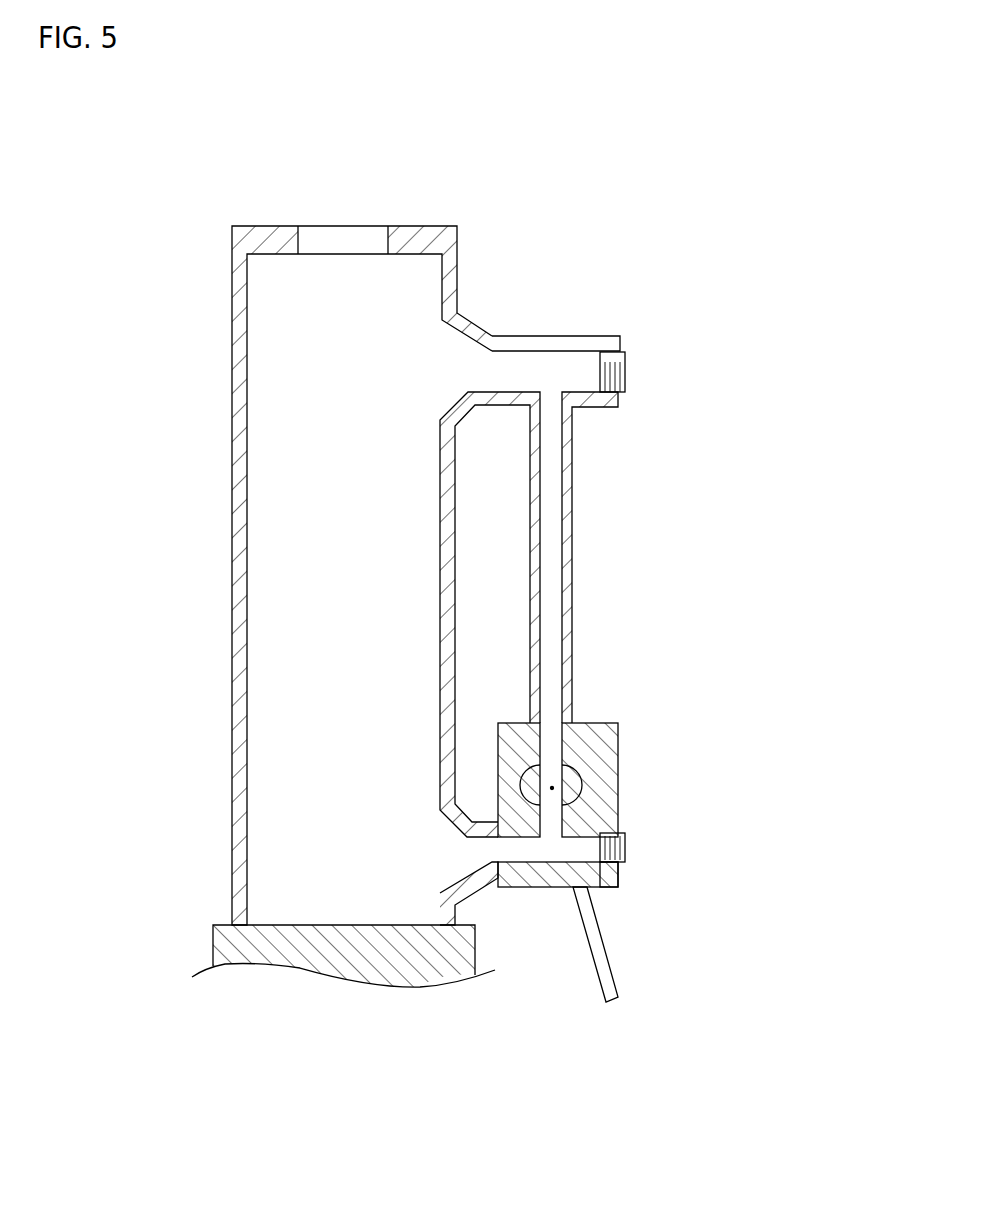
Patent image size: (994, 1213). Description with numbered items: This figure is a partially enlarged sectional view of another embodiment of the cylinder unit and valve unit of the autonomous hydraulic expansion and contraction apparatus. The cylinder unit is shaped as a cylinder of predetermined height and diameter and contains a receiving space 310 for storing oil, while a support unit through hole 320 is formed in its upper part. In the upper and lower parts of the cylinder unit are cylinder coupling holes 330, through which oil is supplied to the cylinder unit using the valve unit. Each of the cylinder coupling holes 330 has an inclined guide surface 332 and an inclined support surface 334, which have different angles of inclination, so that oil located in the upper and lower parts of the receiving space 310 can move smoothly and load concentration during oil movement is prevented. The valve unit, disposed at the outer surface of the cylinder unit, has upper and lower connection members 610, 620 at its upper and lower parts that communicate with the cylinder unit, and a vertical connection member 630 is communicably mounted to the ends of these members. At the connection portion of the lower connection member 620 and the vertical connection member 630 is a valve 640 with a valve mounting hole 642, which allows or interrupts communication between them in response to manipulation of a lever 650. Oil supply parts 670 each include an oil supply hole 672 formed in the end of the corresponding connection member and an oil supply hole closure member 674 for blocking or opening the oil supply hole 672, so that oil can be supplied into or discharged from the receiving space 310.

The receiving space 310 is at (282, 606).
The support unit through hole 320 is at (343, 240).
The cylinder coupling holes 330 is at (299, 496).
The inclined guide surface 332 is at (452, 405).
The inclined support surface 334 is at (482, 334).
The upper connection member 610 is at (545, 334).
The lower connection member 620 is at (494, 892).
The vertical connection member 630 is at (572, 566).
The valve 640 is at (618, 738).
The valve mounting hole 642 is at (560, 786).
The lever 650 is at (608, 972).
The oil supply parts 670 is at (710, 616).
The oil supply hole 672 is at (628, 357).
The oil supply hole closure member 674 is at (673, 614).